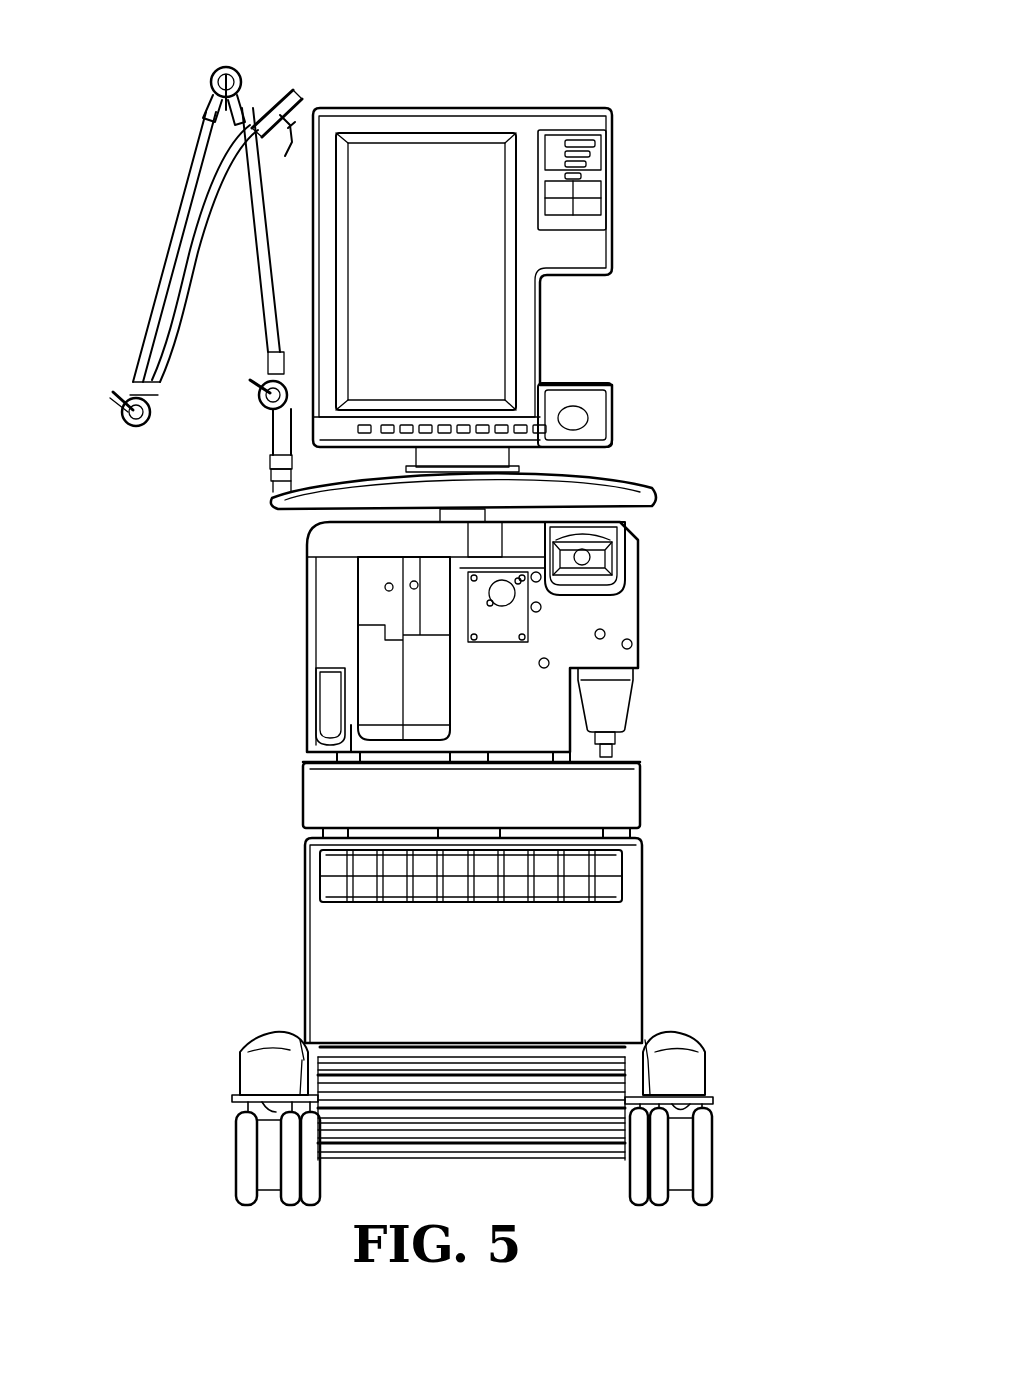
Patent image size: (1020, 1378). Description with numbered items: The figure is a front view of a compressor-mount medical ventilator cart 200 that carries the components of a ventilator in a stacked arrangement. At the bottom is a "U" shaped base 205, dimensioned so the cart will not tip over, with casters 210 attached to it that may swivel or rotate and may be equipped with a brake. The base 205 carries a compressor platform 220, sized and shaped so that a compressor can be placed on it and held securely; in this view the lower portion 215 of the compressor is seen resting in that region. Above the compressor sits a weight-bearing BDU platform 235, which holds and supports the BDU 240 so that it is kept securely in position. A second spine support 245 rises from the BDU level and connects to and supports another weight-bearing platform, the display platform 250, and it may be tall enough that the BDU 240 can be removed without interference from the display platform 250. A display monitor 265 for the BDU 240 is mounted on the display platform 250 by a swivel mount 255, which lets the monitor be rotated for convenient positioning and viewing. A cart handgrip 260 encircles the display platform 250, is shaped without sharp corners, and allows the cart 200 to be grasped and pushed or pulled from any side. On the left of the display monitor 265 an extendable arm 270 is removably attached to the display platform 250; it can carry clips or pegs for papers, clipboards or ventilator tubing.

The compressor-mount medical ventilator cart 200 is at (798, 120).
The "U" shaped base 205 is at (268, 1078).
The casters 210 is at (245, 1175).
The lower portion 215 is at (497, 1130).
The compressor platform 220 is at (472, 1050).
The BDU platform 235 is at (315, 805).
The BDU 240 is at (328, 608).
The second spine support 245 is at (468, 518).
The display platform 250 is at (470, 512).
The swivel mount 255 is at (490, 458).
The cart handgrip 260 is at (268, 493).
The display monitor 265 is at (345, 106).
The extendable arm 270 is at (155, 272).